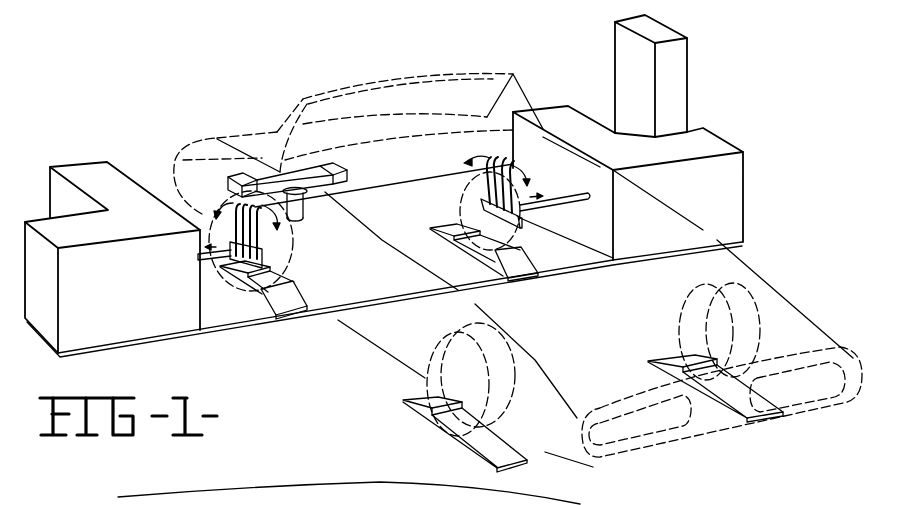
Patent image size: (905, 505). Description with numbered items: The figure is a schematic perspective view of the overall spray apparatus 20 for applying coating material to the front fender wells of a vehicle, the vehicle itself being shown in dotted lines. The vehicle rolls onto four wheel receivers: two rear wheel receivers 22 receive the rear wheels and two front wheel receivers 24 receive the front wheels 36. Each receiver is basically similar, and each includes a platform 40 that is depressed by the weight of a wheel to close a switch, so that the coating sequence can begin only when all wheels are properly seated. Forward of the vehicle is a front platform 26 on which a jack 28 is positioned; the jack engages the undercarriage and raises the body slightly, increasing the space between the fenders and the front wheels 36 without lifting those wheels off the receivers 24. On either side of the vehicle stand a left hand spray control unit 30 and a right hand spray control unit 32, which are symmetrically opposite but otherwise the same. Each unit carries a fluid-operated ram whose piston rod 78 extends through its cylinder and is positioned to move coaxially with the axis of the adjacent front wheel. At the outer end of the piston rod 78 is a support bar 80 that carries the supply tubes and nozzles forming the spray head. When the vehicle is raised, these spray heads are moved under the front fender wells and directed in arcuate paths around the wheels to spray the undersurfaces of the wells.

The overall spray apparatus 20 is at (166, 135).
The rear wheel receivers 22 is at (468, 440).
The front wheel receivers 24 is at (268, 313).
The front platform 26 is at (368, 305).
The jack 28 is at (304, 213).
The left hand spray control unit 30 is at (55, 328).
The right hand spray control unit 32 is at (744, 205).
The front wheels 36 is at (288, 239).
The platform 40 is at (282, 272).
The piston rod 78 is at (217, 268).
The support bar 80 is at (266, 262).